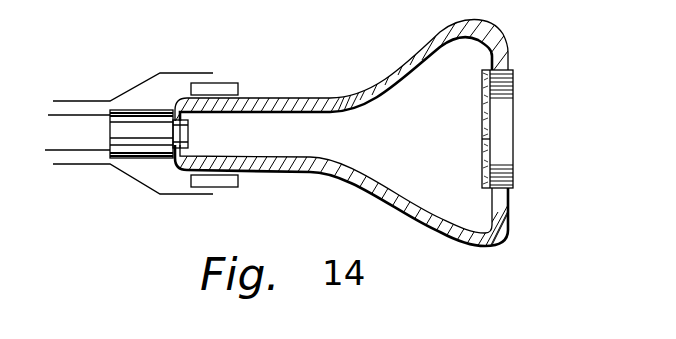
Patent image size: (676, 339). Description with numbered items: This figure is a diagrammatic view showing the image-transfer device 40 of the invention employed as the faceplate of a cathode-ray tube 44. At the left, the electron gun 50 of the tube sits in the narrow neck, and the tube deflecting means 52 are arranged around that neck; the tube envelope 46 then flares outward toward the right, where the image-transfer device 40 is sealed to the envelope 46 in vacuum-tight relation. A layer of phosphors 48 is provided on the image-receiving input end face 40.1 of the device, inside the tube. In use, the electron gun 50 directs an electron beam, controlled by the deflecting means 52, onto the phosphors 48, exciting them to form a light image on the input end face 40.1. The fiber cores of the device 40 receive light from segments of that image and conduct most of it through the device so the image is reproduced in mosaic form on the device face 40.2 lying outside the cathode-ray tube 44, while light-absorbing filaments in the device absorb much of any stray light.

The image-transfer device 40 is at (527, 111).
The input end face 40.1 is at (488, 146).
The device face exterior to tube 40.2 is at (515, 152).
The cathode-ray tube 44 is at (396, 51).
The tube envelope 46 is at (433, 60).
The layer of phosphors 48 is at (488, 70).
The electron gun 50 is at (137, 110).
The tube deflecting means 52 is at (225, 90).